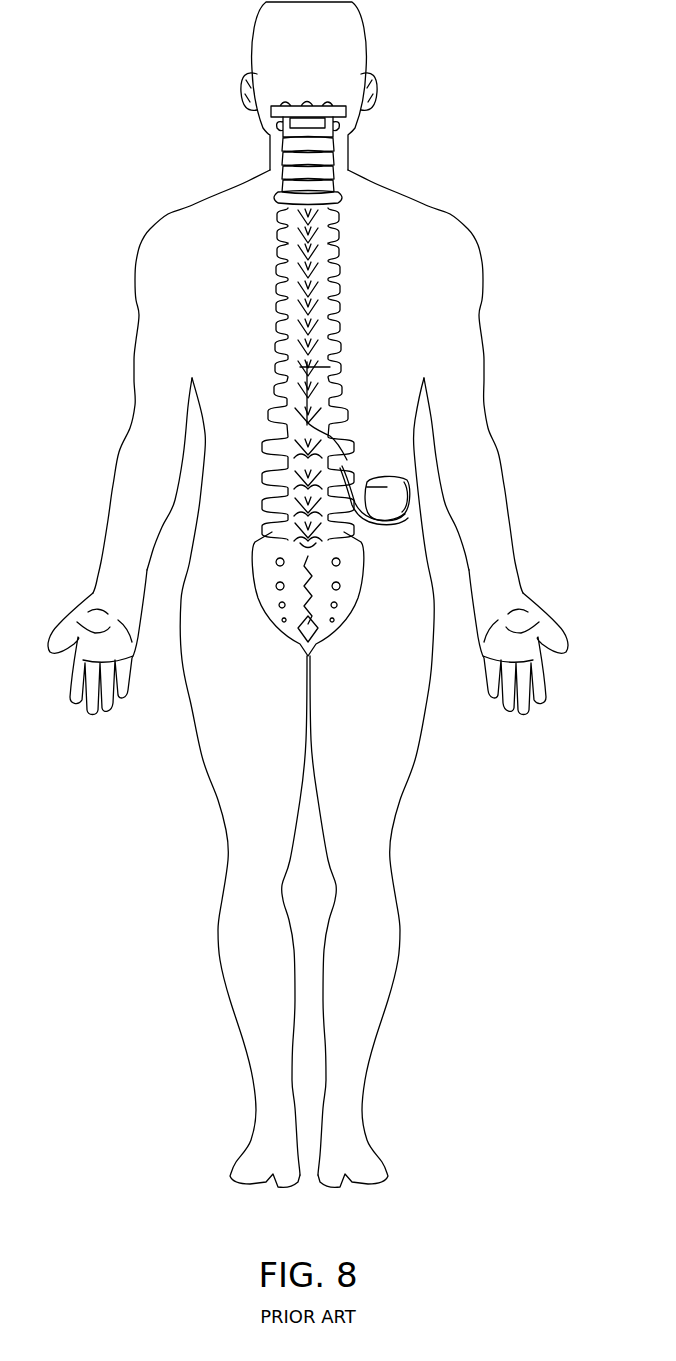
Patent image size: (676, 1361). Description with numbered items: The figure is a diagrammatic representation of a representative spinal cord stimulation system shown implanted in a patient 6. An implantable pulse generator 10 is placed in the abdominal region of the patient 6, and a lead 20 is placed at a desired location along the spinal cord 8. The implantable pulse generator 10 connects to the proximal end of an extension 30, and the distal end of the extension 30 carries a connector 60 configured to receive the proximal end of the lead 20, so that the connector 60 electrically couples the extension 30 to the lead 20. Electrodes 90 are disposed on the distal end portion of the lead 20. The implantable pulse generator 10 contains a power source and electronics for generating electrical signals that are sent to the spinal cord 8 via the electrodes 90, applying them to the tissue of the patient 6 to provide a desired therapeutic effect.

The patient 6 is at (428, 202).
The spinal cord 8 is at (340, 328).
The electrodes 90 is at (340, 368).
The lead 20 is at (343, 428).
The connector 60 is at (353, 457).
The implantable pulse generator 10 is at (390, 495).
The extension 30 is at (407, 523).